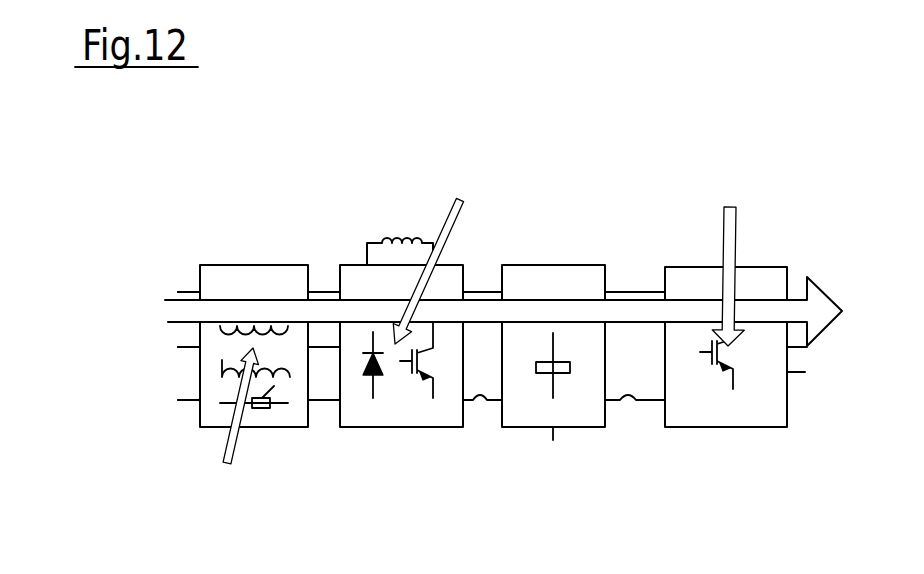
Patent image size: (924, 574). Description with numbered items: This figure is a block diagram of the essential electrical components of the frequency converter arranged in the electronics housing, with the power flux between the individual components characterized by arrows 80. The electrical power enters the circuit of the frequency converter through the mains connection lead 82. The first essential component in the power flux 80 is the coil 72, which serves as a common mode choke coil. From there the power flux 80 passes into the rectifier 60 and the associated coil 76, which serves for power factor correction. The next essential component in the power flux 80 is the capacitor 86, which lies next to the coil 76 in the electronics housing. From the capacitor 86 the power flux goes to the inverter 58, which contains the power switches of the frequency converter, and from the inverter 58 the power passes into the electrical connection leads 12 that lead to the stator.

The electrical connection leads 12 is at (832, 328).
The inverter 58 is at (731, 207).
The rectifier 60 is at (463, 197).
The coil 72 is at (228, 465).
The coil 76 is at (403, 233).
The power flux 80 is at (486, 312).
The mains connection lead 82 is at (172, 290).
The capacitor 86 is at (582, 415).